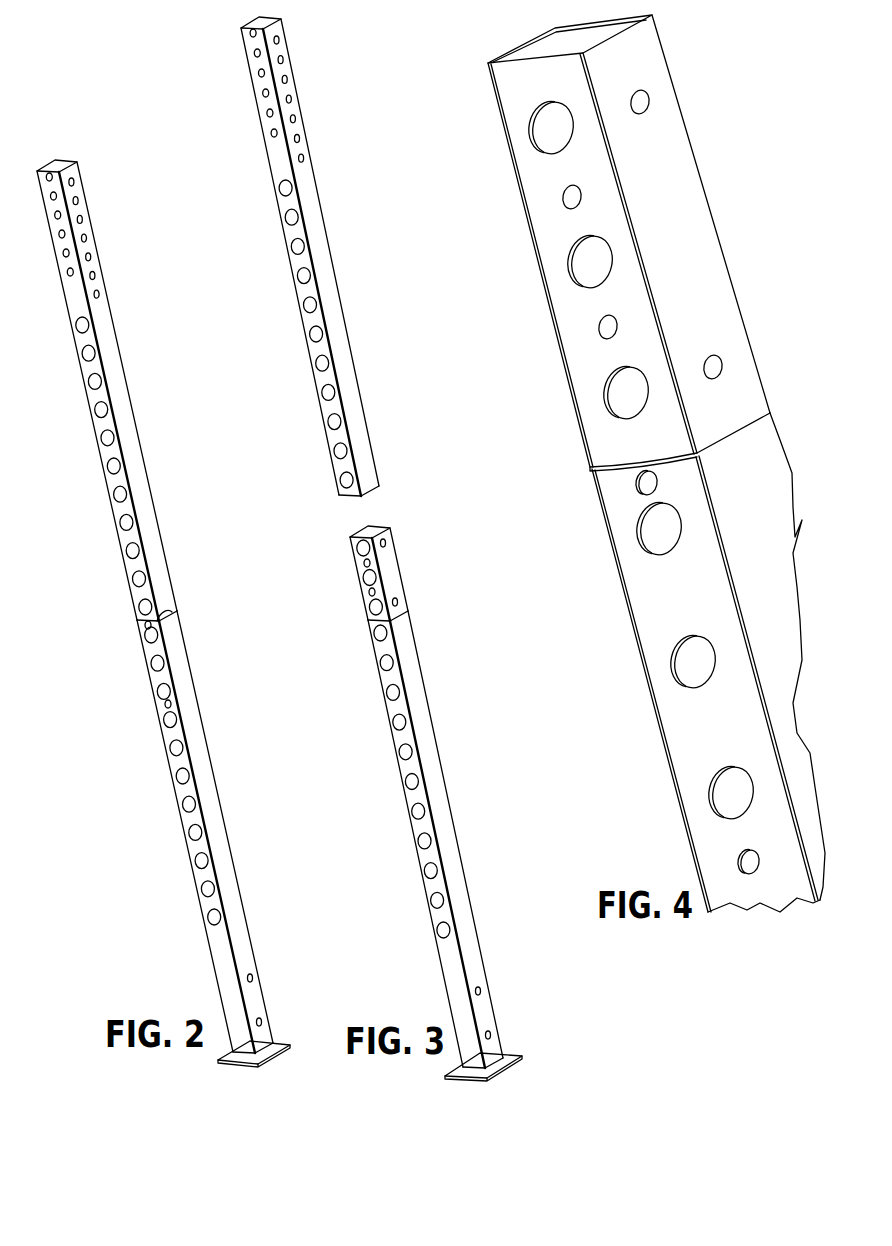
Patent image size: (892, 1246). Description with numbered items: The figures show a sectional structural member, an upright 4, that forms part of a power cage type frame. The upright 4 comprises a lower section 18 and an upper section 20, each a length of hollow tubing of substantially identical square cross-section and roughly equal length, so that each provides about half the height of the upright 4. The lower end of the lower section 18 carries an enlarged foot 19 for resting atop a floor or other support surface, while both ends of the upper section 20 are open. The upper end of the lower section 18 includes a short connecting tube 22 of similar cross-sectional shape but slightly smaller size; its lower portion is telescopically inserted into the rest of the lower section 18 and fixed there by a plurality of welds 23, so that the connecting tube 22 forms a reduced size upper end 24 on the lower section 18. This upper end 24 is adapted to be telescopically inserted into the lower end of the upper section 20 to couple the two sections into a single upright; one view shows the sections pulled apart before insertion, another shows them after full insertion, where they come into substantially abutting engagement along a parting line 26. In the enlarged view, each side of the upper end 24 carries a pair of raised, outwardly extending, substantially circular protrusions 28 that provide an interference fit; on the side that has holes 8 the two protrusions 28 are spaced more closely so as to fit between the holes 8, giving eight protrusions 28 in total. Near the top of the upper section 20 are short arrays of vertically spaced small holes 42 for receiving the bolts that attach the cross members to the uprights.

In FIG. 2, the upright 4 is at (100, 496).
In FIG. 3, the upright 4 is at (437, 642).
In FIG. 4, the holes 8 is at (534, 133).
In FIG. 2, the lower section 18 is at (186, 691).
In FIG. 3, the lower section 18 is at (424, 713).
In FIG. 4, the lower section 18 is at (689, 829).
In FIG. 2, the enlarged foot 19 is at (276, 1043).
In FIG. 3, the enlarged foot 19 is at (516, 1064).
In FIG. 2, the upper section 20 is at (113, 361).
In FIG. 3, the upper section 20 is at (328, 304).
In FIG. 3, the connecting tube 22 is at (392, 569).
In FIG. 2, the welds 23 is at (144, 627).
In FIG. 4, the welds 23 is at (639, 490).
In FIG. 3, the upper end 24 is at (397, 523).
In FIG. 4, the upper end 24 is at (714, 157).
In FIG. 2, the parting line 26 is at (167, 614).
In FIG. 3, the parting line 26 is at (371, 621).
In FIG. 4, the protrusions 28 is at (650, 97).
In FIG. 3, the small holes 42 is at (256, 75).